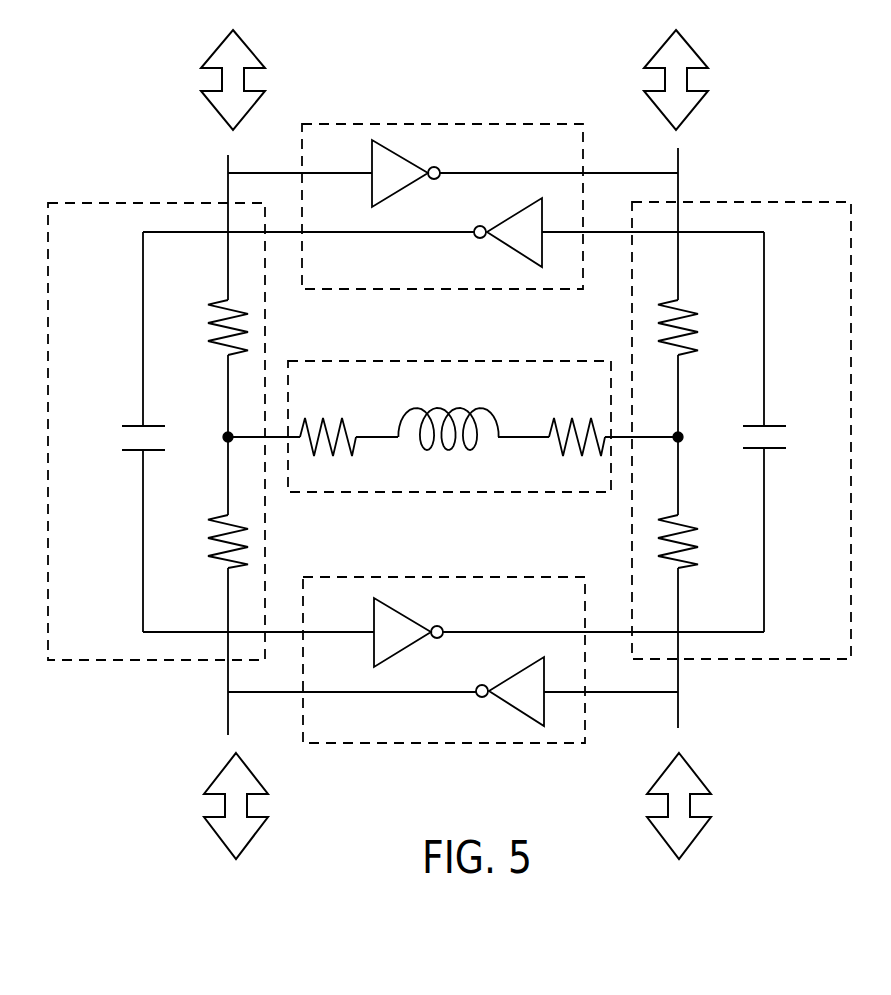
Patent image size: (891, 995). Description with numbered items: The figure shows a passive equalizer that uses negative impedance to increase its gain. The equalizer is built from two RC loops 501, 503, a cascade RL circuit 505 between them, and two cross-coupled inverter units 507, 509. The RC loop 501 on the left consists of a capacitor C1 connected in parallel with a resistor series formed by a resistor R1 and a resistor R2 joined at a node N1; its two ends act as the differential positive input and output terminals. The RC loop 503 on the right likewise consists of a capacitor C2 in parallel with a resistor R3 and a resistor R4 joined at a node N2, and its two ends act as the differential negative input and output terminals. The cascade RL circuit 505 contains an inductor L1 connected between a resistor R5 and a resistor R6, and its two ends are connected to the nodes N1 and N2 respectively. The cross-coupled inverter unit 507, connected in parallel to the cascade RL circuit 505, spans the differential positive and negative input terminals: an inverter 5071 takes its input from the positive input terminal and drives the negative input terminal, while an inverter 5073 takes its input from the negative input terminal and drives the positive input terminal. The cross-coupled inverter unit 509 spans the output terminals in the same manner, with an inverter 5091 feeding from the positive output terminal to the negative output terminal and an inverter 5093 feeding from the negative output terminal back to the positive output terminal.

The RC loop 501 is at (95, 662).
The RC loop 503 is at (803, 661).
The cascade RL circuit 505 is at (357, 360).
The cross-coupled inverter unit 507 is at (443, 122).
The cross-coupled inverter unit 509 is at (428, 746).
The inverter 5071 is at (416, 168).
The inverter 5073 is at (493, 228).
The inverter 5091 is at (418, 628).
The inverter 5093 is at (496, 688).
The resistor R1 is at (208, 327).
The resistor R2 is at (208, 541).
The resistor R3 is at (696, 327).
The resistor R4 is at (696, 541).
The resistor R5 is at (328, 414).
The resistor R6 is at (577, 414).
The inductor L1 is at (448, 410).
The capacitor C1 is at (125, 439).
The capacitor C2 is at (784, 436).
The node N1 is at (213, 434).
The node N2 is at (695, 429).